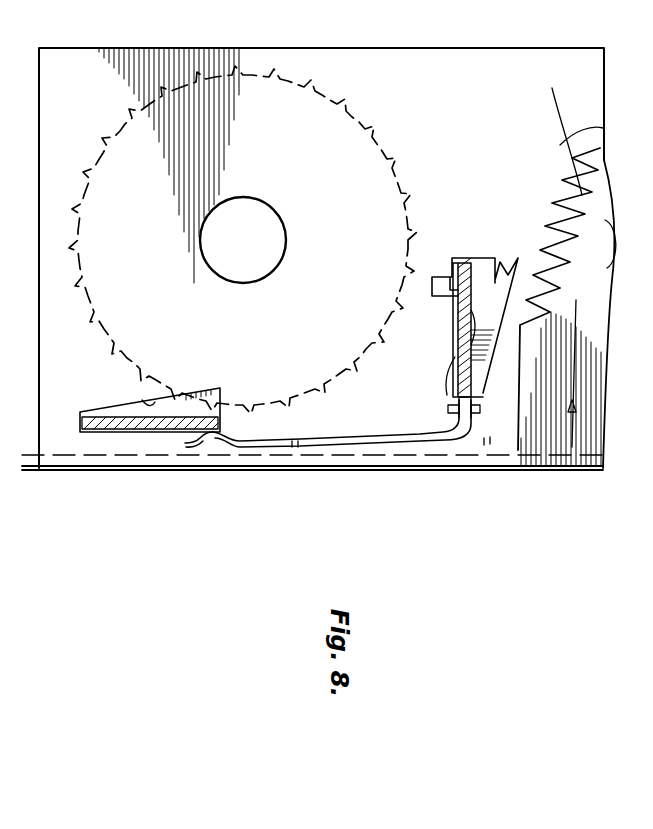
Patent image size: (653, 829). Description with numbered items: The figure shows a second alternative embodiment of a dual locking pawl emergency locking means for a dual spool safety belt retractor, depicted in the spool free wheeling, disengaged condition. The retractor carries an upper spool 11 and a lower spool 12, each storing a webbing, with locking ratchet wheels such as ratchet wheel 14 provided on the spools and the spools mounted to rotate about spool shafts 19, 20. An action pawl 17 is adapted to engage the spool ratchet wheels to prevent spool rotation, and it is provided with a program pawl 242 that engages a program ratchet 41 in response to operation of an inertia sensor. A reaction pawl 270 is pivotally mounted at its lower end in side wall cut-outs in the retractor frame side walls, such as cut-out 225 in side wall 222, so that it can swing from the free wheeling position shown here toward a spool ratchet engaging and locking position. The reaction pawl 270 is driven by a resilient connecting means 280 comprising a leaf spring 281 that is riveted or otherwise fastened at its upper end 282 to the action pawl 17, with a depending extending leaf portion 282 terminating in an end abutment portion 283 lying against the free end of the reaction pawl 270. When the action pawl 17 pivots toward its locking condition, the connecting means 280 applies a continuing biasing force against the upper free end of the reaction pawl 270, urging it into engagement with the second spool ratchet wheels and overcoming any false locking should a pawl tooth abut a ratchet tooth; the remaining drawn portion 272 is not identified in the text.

The upper spool 11 is at (580, 467).
The lower spool 12 is at (401, 146).
The locking ratchet wheel 14 is at (512, 152).
The action pawl 17 is at (462, 328).
The spool shaft 19 is at (612, 246).
The spool shaft 20 is at (243, 218).
The program ratchet 41 is at (558, 249).
The housing 222 is at (50, 232).
The side wall cut-out 225 is at (148, 404).
The program pawl 242 is at (511, 274).
The reaction pawl 270 is at (135, 433).
The wedge plate 272 is at (92, 435).
The resilient connecting means 280 is at (370, 455).
The leaf spring 281 is at (428, 441).
The upper end / depending leaf portion 282 is at (295, 449).
The end abutment portion 283 is at (201, 440).